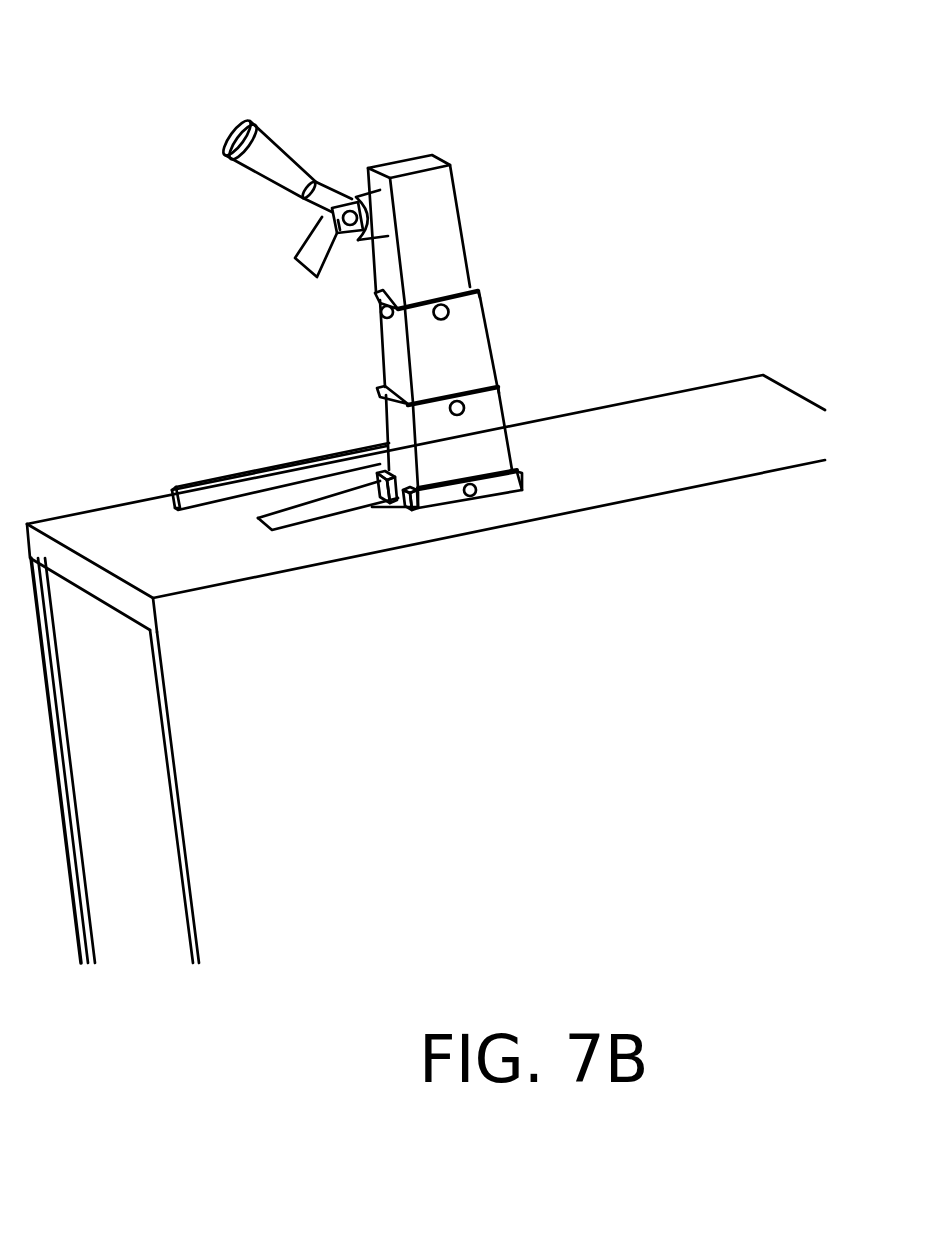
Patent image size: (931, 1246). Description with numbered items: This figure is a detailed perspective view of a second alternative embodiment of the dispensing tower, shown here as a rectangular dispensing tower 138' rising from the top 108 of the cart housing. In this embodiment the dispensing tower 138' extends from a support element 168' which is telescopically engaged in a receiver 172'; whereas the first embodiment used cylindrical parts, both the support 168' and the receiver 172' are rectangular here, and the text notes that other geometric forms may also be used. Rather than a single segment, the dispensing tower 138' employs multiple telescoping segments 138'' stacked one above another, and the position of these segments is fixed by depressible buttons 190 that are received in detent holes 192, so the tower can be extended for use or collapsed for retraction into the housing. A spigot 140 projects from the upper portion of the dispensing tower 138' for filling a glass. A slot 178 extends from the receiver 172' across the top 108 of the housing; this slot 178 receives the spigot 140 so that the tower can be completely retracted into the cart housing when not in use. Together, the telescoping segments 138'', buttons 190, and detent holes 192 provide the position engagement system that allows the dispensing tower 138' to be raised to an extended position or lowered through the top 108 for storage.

The top 108 is at (722, 418).
The slot 178 is at (272, 525).
The spigot 140 is at (353, 197).
The dispensing tower 138' is at (459, 186).
The telescoping segments 138'' is at (535, 291).
The depressible buttons 190 is at (442, 304).
The support element 168' is at (520, 385).
The receiver 172' is at (552, 418).
The detent holes 192 is at (378, 391).